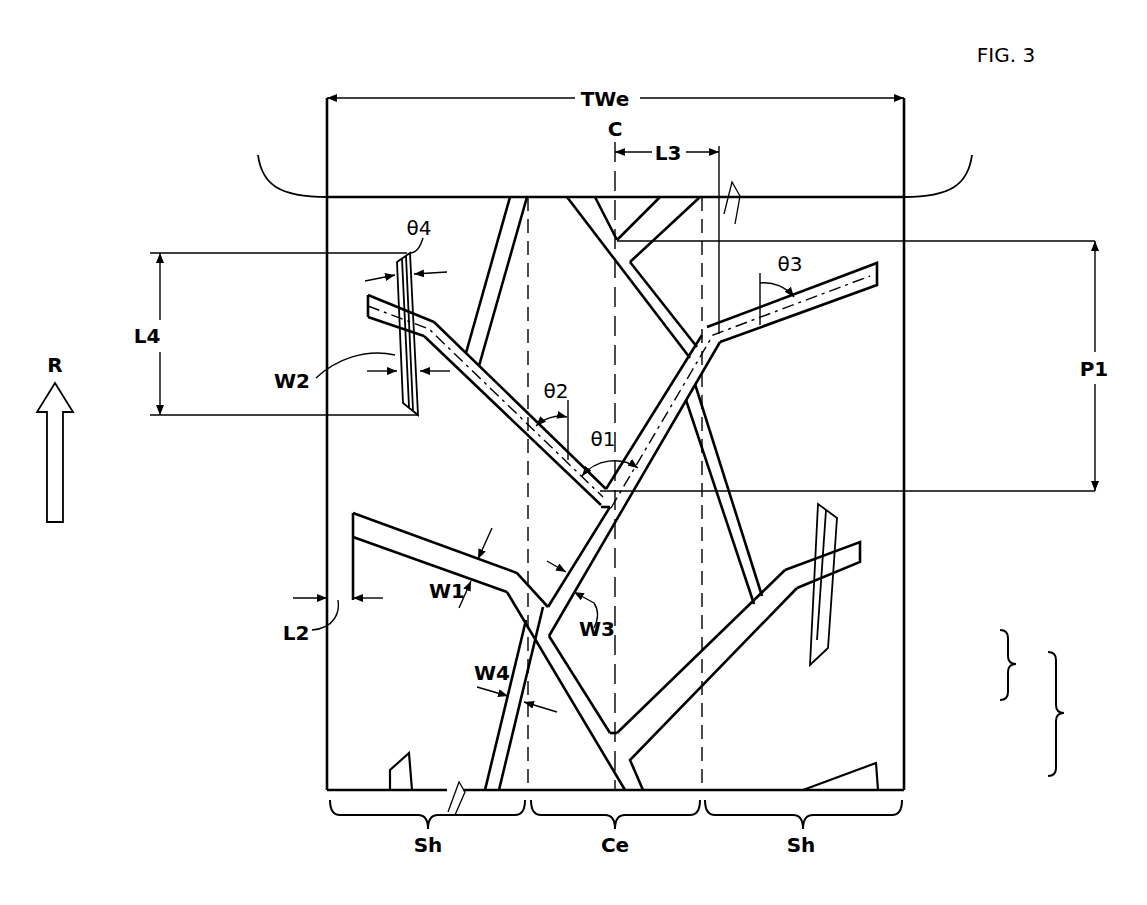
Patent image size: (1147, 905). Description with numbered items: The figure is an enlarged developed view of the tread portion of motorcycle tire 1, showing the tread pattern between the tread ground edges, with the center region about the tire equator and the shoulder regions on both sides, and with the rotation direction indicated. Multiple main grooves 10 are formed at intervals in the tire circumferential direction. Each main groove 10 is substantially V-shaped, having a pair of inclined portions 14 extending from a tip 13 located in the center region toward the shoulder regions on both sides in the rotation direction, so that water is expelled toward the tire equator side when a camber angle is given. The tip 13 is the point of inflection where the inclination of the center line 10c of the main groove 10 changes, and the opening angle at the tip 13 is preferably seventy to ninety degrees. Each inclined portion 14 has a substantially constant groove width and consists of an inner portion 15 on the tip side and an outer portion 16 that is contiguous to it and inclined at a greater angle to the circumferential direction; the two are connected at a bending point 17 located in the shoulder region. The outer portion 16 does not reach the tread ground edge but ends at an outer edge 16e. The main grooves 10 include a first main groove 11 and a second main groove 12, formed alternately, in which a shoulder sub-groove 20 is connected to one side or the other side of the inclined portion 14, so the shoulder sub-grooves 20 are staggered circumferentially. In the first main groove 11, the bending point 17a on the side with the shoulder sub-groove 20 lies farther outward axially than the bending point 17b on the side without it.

The motorcycle tire 1 is at (616, 456).
The main groove 10 is at (654, 453).
The first main groove 11 is at (801, 473).
The second main groove 12 is at (613, 453).
The tip 13 is at (601, 512).
The inclined portion 14 is at (625, 682).
The inner portion 15 is at (562, 568).
The outer portion 16 is at (431, 323).
The outer edge 16e is at (353, 516).
The bending point 17 is at (613, 453).
The bending point on the side with shoulder sub-groove 17a is at (722, 345).
The bending point on the side without shoulder sub-groove 17b is at (460, 335).
The shoulder sub-groove 20 is at (397, 335).
The center line 10c is at (505, 395).